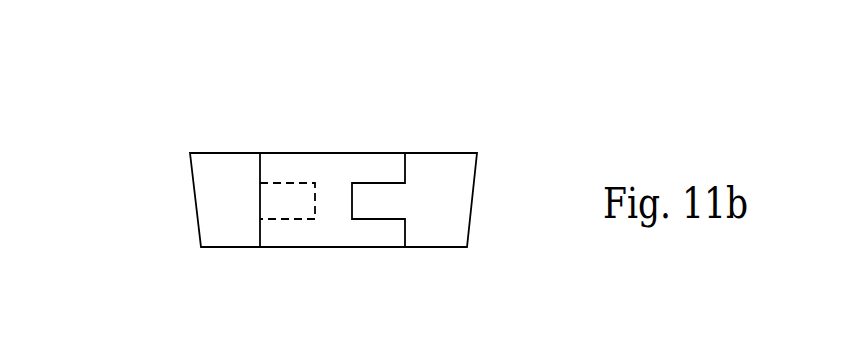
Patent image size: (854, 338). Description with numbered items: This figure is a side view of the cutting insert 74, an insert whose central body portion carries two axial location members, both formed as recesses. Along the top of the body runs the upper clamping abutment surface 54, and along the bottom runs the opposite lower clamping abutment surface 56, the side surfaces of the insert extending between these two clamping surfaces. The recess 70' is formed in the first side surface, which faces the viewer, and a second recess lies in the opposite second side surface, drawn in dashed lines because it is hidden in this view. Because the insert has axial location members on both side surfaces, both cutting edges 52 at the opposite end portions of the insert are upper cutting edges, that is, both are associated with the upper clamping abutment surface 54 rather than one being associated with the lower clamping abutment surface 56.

The cutting insert 74 is at (468, 77).
The cutting edges 52 is at (190, 152).
The upper clamping abutment surface 54 is at (323, 152).
The lower clamping abutment surface 56 is at (319, 247).
The axial location member (recess) 70' is at (339, 229).